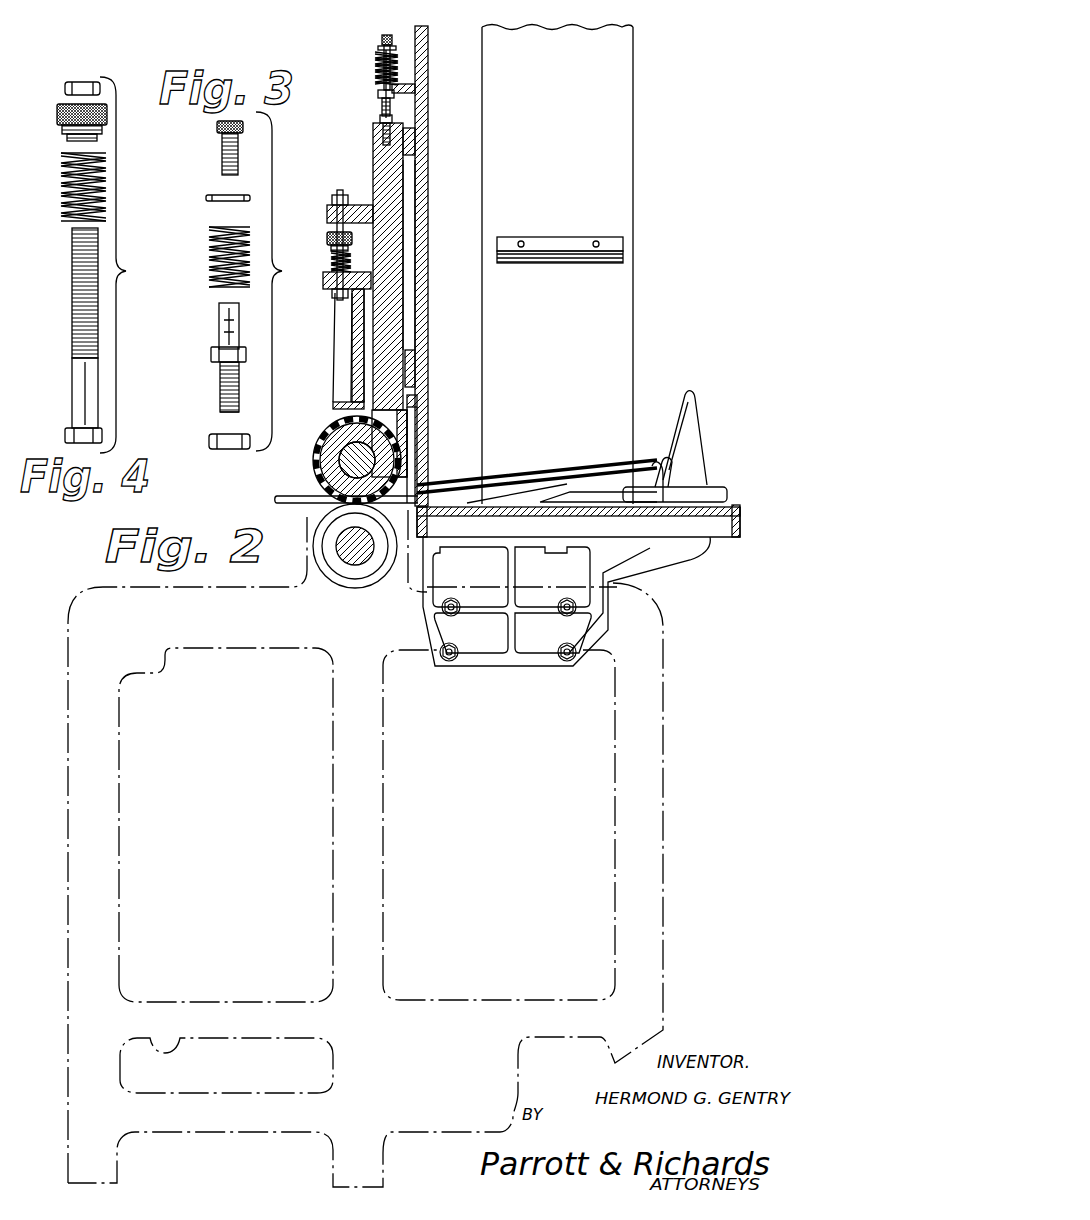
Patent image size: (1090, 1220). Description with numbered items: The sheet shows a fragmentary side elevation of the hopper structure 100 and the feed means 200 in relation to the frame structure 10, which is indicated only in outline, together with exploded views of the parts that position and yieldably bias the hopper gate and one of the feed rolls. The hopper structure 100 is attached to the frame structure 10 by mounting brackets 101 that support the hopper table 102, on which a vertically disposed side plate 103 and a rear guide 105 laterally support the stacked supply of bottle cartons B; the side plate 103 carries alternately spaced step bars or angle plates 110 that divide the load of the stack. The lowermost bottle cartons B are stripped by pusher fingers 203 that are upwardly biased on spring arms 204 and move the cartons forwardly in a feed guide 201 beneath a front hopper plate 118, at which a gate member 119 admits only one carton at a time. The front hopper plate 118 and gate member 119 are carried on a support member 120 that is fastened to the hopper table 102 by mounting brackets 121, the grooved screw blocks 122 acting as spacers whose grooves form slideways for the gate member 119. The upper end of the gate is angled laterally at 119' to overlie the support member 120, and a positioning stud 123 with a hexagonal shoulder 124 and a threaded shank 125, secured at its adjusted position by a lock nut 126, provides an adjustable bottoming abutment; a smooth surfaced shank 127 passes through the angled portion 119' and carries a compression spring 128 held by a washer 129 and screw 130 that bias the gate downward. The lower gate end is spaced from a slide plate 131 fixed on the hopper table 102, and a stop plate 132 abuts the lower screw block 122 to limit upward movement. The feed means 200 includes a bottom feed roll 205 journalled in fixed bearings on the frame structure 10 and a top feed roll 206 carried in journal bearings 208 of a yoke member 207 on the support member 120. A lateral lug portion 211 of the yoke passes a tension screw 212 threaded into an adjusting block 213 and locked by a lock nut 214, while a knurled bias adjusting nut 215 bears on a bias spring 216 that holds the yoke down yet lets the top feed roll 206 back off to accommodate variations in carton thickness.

In FIG. 2, the frame structure 10 is at (664, 782).
In FIG. 2, the hopper structure 100 is at (636, 113).
In FIG. 2, the mounting brackets 101 is at (680, 553).
In FIG. 2, the hopper table 102 is at (740, 537).
In FIG. 2, the side plate 103 is at (613, 201).
In FIG. 2, the rear guide 105 is at (694, 403).
In FIG. 2, the step bars or angle plates 110 is at (625, 258).
In FIG. 2, the front hopper plate 118 is at (428, 250).
In FIG. 2, the gate member 119 is at (436, 455).
In FIG. 2, the laterally angled portion 119' is at (440, 76).
In FIG. 2, the support member 120 is at (373, 162).
In FIG. 2, the mounting brackets 121 is at (457, 428).
In FIG. 2, the grooved screw blocks 122 is at (415, 118).
In FIG. 3, the positioning stud 123 is at (211, 356).
In FIG. 2, the positioning stud 123 is at (378, 95).
In FIG. 3, the hexagonal shoulder 124 is at (220, 375).
In FIG. 2, the hexagonal shoulder 124 is at (381, 102).
In FIG. 3, the threaded shank 125 is at (224, 411).
In FIG. 2, the threaded shank 125 is at (383, 136).
In FIG. 3, the pin 126 is at (209, 443).
In FIG. 2, the pin 126 is at (380, 118).
In FIG. 3, the smooth surfaced shank 127 is at (219, 326).
In FIG. 2, the smooth surfaced shank 127 is at (380, 73).
In FIG. 3, the compression spring 128 is at (216, 266).
In FIG. 2, the compression spring 128 is at (375, 60).
In FIG. 3, the washer 129 is at (206, 198).
In FIG. 2, the washer 129 is at (378, 48).
In FIG. 3, the screw 130 is at (222, 145).
In FIG. 2, the screw 130 is at (382, 39).
In FIG. 2, the slide plate 131 is at (470, 488).
In FIG. 2, the stop plate 132 is at (503, 467).
In FIG. 2, the feed means 200 is at (346, 592).
In FIG. 2, the feed guide 201 is at (296, 504).
In FIG. 2, the pusher fingers 203 is at (680, 472).
In FIG. 2, the spring arms 204 is at (590, 480).
In FIG. 2, the bottom feed roll 205 is at (378, 585).
In FIG. 2, the top feed roll 206 is at (318, 474).
In FIG. 2, the yoke member 207 is at (343, 362).
In FIG. 2, the journal bearings 208 is at (328, 440).
In FIG. 2, the lateral lug portion 211 is at (332, 290).
In FIG. 4, the tension screw 212 is at (72, 330).
In FIG. 2, the tension screw 212 is at (340, 192).
In FIG. 2, the adjusting block 213 is at (330, 215).
In FIG. 4, the lock nut 214 is at (65, 88).
In FIG. 2, the lock nut 214 is at (332, 199).
In FIG. 4, the knurled bias adjusting nut 215 is at (61, 120).
In FIG. 2, the knurled bias adjusting nut 215 is at (330, 238).
In FIG. 4, the bias spring 216 is at (66, 188).
In FIG. 2, the bias spring 216 is at (331, 263).
In FIG. 2, the bottle cartons B is at (548, 470).